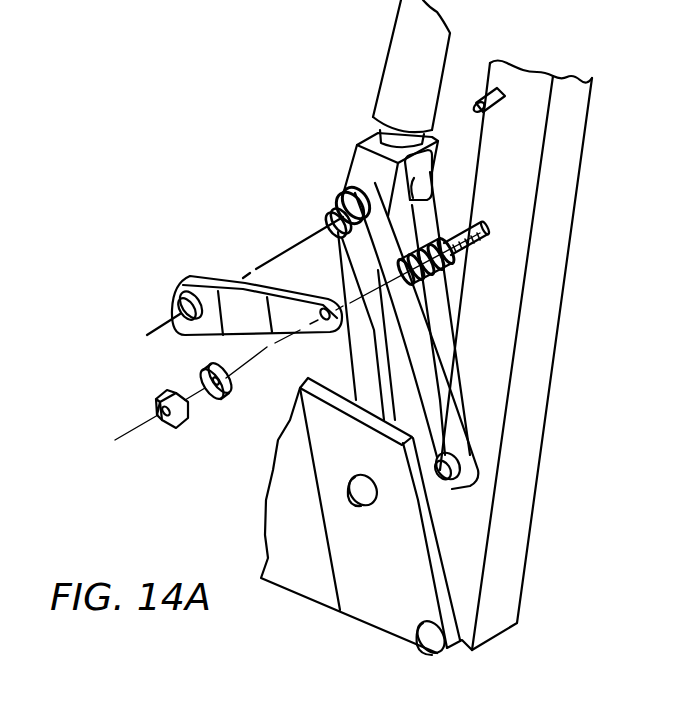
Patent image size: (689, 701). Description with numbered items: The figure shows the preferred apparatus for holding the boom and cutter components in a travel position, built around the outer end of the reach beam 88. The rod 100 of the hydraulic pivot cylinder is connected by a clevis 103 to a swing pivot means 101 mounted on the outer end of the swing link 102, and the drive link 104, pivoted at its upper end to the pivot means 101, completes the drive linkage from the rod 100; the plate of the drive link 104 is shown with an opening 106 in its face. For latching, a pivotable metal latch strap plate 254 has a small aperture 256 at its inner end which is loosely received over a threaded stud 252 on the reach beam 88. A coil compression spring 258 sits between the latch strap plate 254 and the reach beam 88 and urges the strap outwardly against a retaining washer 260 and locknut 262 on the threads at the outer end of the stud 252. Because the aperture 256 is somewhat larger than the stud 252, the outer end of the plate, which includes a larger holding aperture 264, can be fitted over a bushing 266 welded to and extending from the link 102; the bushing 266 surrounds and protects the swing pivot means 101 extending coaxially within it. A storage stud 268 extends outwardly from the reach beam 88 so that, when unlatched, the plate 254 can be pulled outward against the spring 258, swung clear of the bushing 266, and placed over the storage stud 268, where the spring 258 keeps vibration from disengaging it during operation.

The reach beam 88 is at (560, 190).
The rod 100 is at (405, 49).
The swing pivot means 101 is at (331, 222).
The swing link 102 is at (427, 395).
The clevis 103 is at (366, 165).
The drive link 104 is at (352, 408).
The hole 106 is at (359, 499).
The threaded stud 252 is at (486, 226).
The pivotable latch strap plate 254 is at (271, 292).
The small aperture 256 is at (321, 322).
The coil compression spring 258 is at (443, 278).
The retaining washer 260 is at (222, 397).
The locknut 262 is at (183, 428).
The holding aperture 264 is at (181, 305).
The bushing 266 is at (339, 196).
The storage stud 268 is at (490, 64).